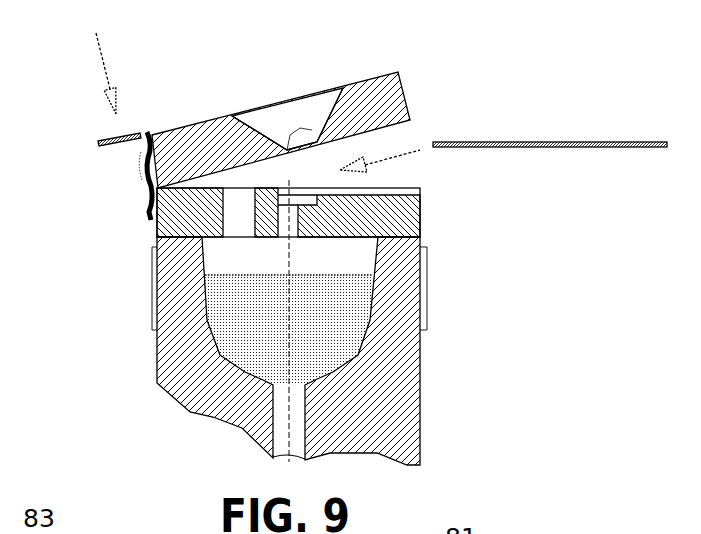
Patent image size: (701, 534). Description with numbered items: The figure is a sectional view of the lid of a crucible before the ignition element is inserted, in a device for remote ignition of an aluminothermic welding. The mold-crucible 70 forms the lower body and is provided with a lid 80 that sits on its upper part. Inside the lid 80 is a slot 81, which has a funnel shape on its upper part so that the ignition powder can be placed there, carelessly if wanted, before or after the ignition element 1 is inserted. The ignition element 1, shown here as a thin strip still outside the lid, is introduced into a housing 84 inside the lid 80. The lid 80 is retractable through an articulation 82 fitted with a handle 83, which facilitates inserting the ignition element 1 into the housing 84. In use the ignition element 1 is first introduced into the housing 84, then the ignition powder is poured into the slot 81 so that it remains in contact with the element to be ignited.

The ignition element 1 is at (557, 132).
The mold-crucible 70 is at (155, 352).
The lid 80 is at (212, 107).
The slot 81 is at (298, 120).
The articulation 82 is at (145, 188).
The handle 83 is at (112, 137).
The housing 84 is at (380, 190).